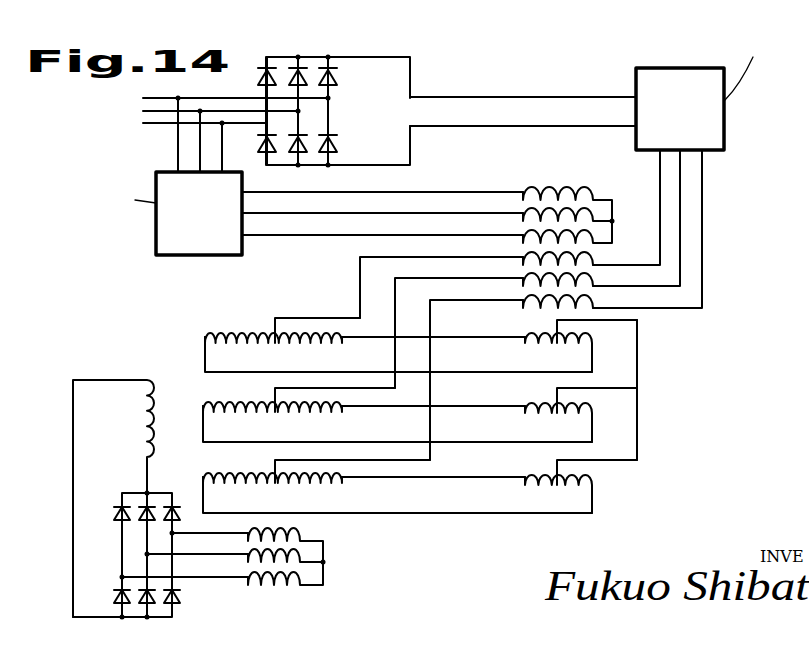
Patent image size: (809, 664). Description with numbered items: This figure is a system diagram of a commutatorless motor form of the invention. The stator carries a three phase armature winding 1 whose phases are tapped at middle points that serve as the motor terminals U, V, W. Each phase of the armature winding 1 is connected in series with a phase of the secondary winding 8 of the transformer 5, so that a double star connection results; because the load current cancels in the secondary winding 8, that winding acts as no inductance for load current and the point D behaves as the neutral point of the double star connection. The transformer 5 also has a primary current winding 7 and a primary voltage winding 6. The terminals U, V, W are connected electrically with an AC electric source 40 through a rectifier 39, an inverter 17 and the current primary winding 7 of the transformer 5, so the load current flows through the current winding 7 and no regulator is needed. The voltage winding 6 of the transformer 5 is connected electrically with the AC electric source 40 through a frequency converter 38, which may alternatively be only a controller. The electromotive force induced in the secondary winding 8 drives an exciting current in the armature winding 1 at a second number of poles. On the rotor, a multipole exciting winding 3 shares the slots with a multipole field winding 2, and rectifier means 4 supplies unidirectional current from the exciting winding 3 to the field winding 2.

The armature winding 1 is at (386, 405).
The field winding 2 is at (150, 420).
The exciting winding 3 is at (300, 532).
The rectifier means 4 is at (120, 527).
The transformer 5 is at (601, 417).
The primary voltage winding 6 is at (563, 186).
The primary current winding 7 is at (597, 258).
The secondary winding 8 is at (594, 343).
The inverter 17 is at (581, 170).
The frequency converter 38 is at (127, 203).
The rectifier 39 is at (342, 82).
The AC electric source 40 is at (143, 122).
The neutral point D is at (637, 389).
The middle point (terminal) U is at (398, 334).
The middle point (terminal) V is at (397, 404).
The middle point (terminal) W is at (397, 477).